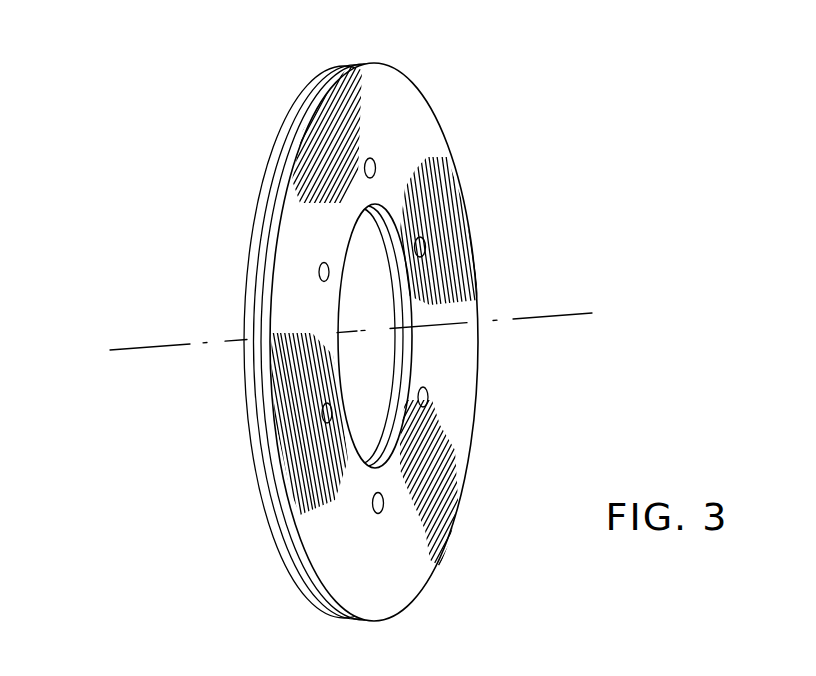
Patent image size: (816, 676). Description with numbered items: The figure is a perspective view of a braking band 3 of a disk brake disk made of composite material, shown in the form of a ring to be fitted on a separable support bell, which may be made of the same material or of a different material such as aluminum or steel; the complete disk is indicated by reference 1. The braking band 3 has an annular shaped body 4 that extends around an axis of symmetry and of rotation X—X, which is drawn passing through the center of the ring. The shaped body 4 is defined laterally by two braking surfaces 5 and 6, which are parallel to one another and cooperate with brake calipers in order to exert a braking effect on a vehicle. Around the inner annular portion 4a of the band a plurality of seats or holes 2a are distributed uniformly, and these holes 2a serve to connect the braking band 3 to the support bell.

The disc / flywheel body 1 is at (374, 328).
The seats or holes 2a is at (440, 400).
The braking ring or band 3 is at (470, 302).
The annular shaped body 4 is at (375, 103).
The inner annular portion 4a is at (393, 468).
The braking surface 5 is at (253, 195).
The braking surface 6 is at (415, 140).
The axis of symmetry and of rotation X is at (172, 342).